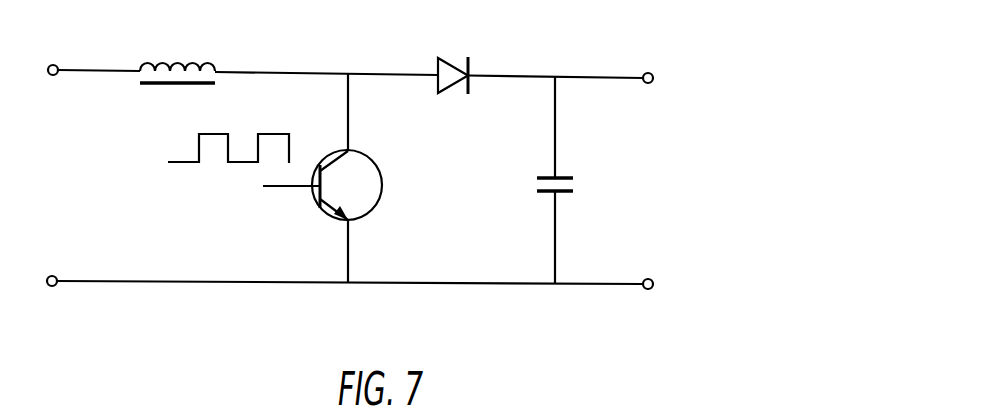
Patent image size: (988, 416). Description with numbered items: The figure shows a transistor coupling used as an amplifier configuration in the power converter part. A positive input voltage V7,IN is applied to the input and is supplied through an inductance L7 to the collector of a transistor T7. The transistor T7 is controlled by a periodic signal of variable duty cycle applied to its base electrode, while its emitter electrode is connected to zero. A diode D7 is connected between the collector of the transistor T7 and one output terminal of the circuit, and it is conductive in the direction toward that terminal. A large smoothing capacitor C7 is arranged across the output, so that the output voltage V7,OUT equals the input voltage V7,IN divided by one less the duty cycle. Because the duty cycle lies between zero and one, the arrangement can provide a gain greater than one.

The inductance L7 is at (177, 49).
The diode D7 is at (456, 53).
The transistor T7 is at (341, 178).
The smoothing capacitor C7 is at (529, 180).
The input voltage V7,IN is at (50, 181).
The output voltage V7,OUT is at (673, 186).